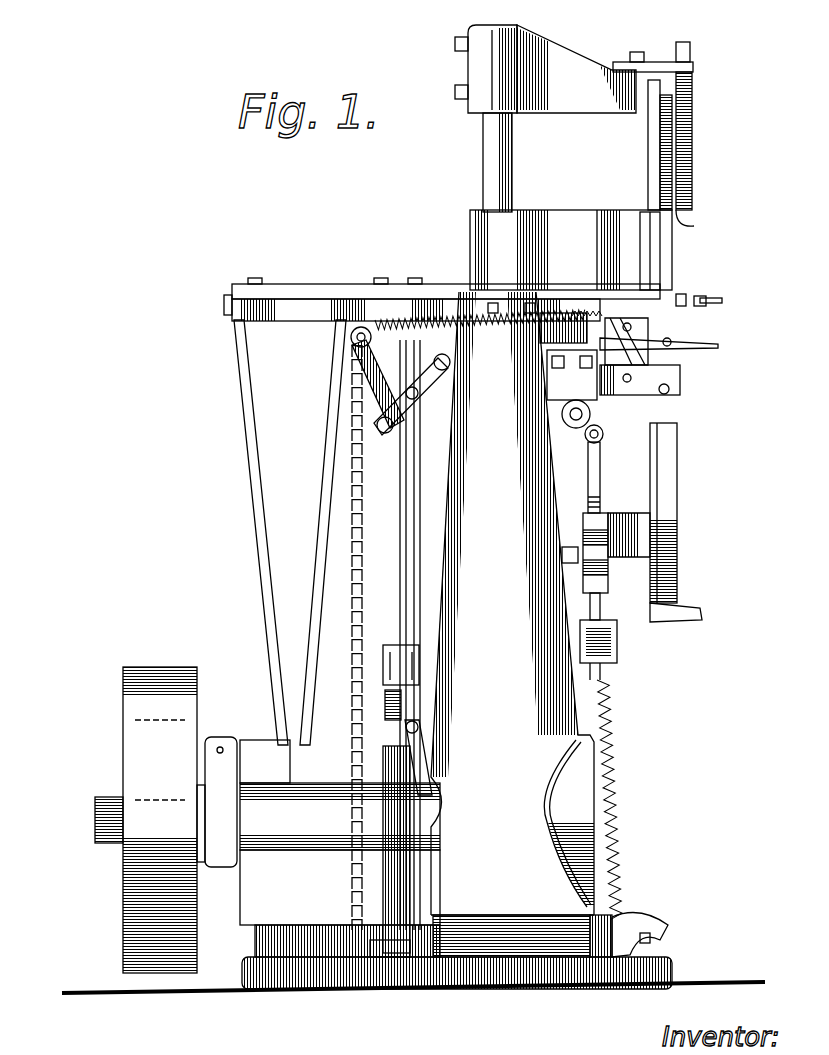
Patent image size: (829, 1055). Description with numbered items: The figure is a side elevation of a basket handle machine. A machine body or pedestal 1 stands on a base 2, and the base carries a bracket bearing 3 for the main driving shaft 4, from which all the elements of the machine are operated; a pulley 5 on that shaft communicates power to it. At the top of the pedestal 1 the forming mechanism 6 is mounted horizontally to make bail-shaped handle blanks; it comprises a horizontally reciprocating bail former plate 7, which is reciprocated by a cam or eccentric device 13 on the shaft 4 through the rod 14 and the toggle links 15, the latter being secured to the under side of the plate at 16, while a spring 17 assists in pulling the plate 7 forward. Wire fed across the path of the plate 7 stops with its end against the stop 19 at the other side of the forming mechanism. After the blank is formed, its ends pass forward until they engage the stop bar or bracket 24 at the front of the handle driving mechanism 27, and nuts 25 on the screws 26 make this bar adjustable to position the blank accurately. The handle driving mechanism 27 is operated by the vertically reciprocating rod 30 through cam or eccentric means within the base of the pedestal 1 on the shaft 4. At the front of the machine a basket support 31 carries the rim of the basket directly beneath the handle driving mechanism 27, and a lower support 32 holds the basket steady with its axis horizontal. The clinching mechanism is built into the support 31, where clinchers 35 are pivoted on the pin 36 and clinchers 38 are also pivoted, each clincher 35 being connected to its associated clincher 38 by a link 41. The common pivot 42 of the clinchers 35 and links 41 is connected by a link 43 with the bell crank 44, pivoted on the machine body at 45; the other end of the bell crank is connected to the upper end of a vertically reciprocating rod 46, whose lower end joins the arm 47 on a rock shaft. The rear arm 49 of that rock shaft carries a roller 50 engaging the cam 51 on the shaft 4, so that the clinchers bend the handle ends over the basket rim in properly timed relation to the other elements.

The machine body or pedestal 1 is at (537, 722).
The base 2 is at (428, 975).
The bracket bearing 3 is at (318, 847).
The main driving shaft 4 is at (92, 821).
The pulley 5 is at (148, 718).
The forming mechanism 6 is at (402, 297).
The bail former plate 7 is at (616, 222).
The cam or eccentric device 13 is at (393, 843).
The rod 14 is at (416, 510).
The toggle links 15 is at (396, 422).
The connection point of toggle links 16 is at (350, 337).
The spring 17 is at (485, 340).
The stop 19 is at (583, 313).
The stop bar or bracket 24 is at (703, 298).
The nuts 25 is at (708, 300).
The screws 26 is at (684, 296).
The handle driving mechanism 27 is at (650, 257).
The vertically reciprocating rod 30 is at (503, 174).
The basket support 31 is at (705, 350).
The support 32 is at (677, 572).
The clinchers 35 is at (665, 376).
The pin 36 is at (670, 341).
The clinchers 38 is at (631, 327).
The link 41 is at (630, 380).
The common pivot 42 is at (670, 390).
The link 43 is at (627, 428).
The bell crank 44 is at (562, 414).
The bell crank pivot 45 is at (572, 420).
The vertically reciprocating rod 46 is at (610, 566).
The arm 47 is at (617, 656).
The arm 49 is at (365, 660).
The roller 50 is at (383, 706).
The cam 51 is at (378, 950).